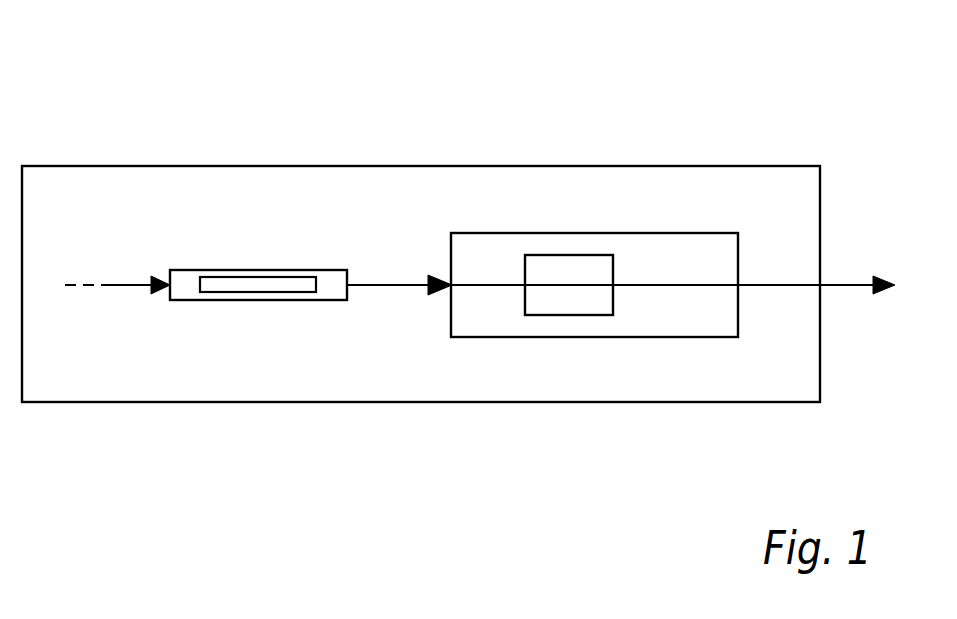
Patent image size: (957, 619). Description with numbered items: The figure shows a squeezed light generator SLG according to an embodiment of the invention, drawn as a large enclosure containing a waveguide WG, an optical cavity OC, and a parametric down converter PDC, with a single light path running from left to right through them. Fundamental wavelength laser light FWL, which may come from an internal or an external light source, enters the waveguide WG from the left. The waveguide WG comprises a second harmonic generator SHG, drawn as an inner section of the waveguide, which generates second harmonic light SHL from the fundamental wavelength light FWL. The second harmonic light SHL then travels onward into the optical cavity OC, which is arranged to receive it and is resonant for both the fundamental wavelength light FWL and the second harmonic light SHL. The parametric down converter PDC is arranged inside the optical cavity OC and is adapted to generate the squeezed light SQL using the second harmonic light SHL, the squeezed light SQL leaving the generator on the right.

The squeezed light generator SLG is at (214, 166).
The fundamental wavelength laser light FWL is at (128, 285).
The waveguide WG is at (254, 270).
The second harmonic generator SHG is at (265, 293).
The second harmonic light SHL is at (400, 285).
The optical cavity OC is at (542, 337).
The parametric down converter PDC is at (566, 255).
The squeezed light SQL is at (842, 285).